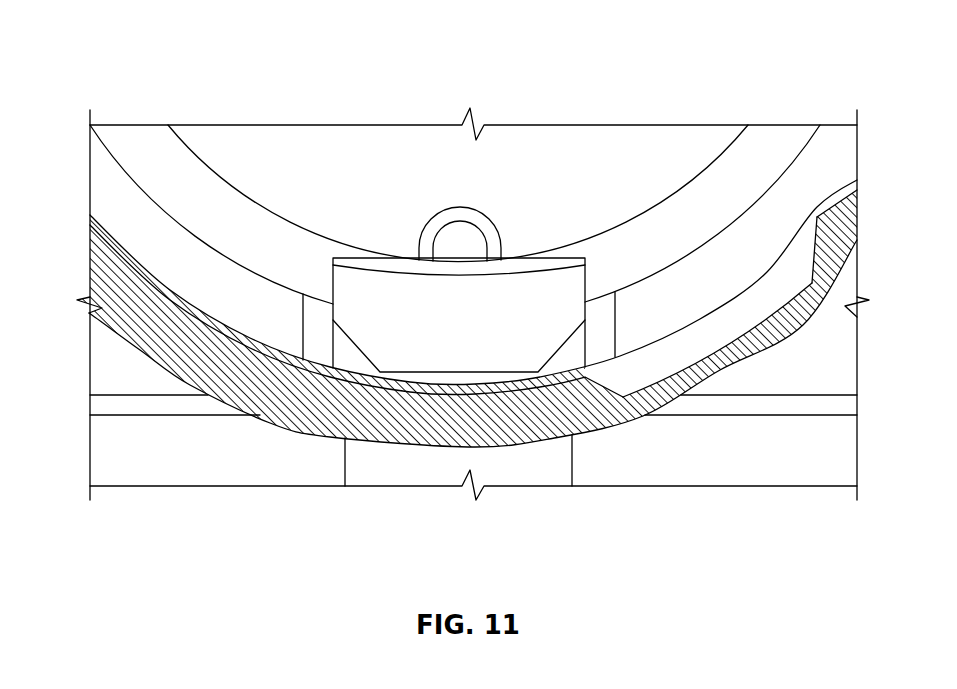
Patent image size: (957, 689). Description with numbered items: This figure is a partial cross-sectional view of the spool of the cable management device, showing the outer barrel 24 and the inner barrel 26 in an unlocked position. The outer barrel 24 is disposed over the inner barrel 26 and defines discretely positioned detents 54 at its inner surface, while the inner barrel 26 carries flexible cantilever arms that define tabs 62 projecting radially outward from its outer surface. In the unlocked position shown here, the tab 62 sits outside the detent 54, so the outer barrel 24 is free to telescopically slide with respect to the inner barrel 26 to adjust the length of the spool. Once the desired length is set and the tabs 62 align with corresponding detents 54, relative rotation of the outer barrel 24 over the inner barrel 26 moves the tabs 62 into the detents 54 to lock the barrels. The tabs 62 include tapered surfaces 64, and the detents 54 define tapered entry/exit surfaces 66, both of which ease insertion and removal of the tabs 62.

The outer barrel 24 is at (177, 347).
The inner barrel 26 is at (245, 215).
The detents 54 is at (772, 305).
The tabs 62 is at (455, 358).
The tapered surfaces 64 is at (360, 352).
The tapered entry/exit surfaces 66 is at (603, 392).